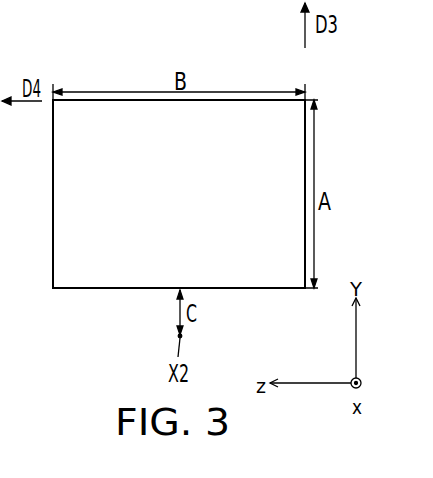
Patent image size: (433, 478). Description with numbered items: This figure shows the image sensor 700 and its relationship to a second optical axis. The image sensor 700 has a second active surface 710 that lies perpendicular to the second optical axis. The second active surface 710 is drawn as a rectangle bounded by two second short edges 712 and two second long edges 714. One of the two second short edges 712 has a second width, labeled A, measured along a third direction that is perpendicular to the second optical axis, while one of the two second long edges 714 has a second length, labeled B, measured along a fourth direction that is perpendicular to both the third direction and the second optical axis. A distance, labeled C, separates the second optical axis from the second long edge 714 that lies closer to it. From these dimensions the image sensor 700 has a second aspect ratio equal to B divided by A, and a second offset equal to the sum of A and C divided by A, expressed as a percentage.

The image sensor 700 is at (92, 279).
The second active surface 710 is at (93, 185).
The second short edges 712 is at (52, 210).
The second long edges 714 is at (93, 103).